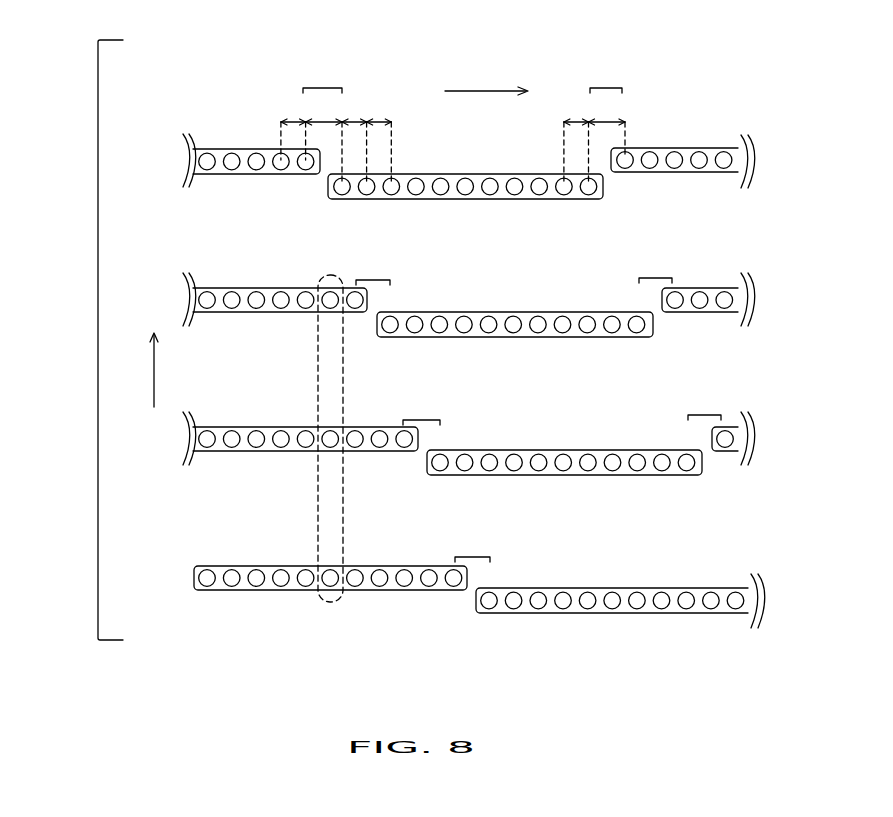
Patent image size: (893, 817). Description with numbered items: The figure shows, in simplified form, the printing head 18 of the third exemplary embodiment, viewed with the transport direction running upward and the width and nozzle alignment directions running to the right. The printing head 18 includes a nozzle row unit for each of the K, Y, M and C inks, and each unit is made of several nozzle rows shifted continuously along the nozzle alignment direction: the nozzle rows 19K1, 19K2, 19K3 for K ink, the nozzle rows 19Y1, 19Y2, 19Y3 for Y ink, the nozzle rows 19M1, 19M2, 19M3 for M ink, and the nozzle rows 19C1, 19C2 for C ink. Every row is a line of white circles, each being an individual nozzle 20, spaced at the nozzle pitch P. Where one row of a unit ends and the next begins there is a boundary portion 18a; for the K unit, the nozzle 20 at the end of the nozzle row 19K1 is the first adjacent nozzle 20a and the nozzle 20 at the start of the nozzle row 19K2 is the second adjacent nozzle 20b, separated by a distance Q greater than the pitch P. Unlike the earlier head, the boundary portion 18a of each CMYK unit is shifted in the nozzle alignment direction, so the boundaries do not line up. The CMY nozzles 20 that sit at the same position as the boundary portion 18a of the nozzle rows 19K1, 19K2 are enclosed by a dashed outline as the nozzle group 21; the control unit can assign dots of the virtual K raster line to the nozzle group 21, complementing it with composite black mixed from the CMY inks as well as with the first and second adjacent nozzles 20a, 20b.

The printing head 18 is at (98, 340).
The boundary portion 18a is at (323, 88).
The nozzle row 19K1 is at (251, 172).
The nozzle row 19K2 is at (465, 191).
The nozzle row 19K3 is at (672, 147).
The nozzle row 19Y1 is at (229, 287).
The nozzle row 19Y2 is at (472, 311).
The nozzle row 19Y3 is at (688, 287).
The nozzle row 19M1 is at (230, 426).
The nozzle row 19M2 is at (473, 449).
The nozzle row 19M3 is at (725, 426).
The nozzle row 19C1 is at (232, 564).
The nozzle row 19C2 is at (647, 588).
The nozzle 20 is at (492, 190).
The first adjacent nozzle 20a is at (301, 171).
The second adjacent nozzle 20b is at (346, 191).
The nozzle group 21 is at (349, 480).